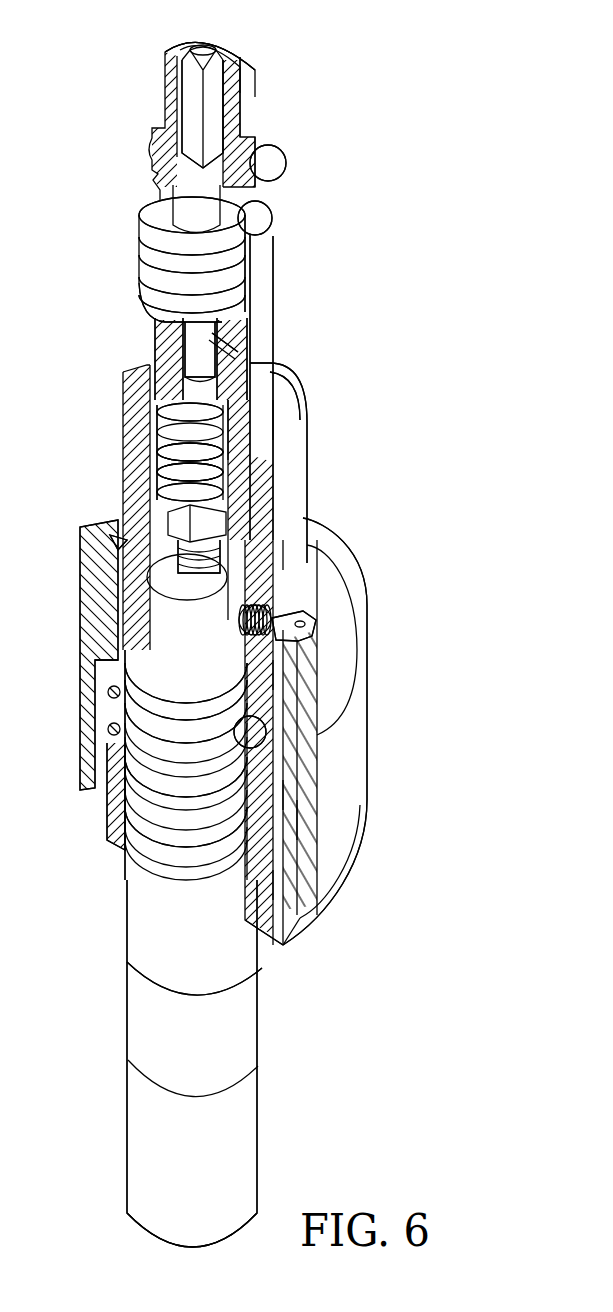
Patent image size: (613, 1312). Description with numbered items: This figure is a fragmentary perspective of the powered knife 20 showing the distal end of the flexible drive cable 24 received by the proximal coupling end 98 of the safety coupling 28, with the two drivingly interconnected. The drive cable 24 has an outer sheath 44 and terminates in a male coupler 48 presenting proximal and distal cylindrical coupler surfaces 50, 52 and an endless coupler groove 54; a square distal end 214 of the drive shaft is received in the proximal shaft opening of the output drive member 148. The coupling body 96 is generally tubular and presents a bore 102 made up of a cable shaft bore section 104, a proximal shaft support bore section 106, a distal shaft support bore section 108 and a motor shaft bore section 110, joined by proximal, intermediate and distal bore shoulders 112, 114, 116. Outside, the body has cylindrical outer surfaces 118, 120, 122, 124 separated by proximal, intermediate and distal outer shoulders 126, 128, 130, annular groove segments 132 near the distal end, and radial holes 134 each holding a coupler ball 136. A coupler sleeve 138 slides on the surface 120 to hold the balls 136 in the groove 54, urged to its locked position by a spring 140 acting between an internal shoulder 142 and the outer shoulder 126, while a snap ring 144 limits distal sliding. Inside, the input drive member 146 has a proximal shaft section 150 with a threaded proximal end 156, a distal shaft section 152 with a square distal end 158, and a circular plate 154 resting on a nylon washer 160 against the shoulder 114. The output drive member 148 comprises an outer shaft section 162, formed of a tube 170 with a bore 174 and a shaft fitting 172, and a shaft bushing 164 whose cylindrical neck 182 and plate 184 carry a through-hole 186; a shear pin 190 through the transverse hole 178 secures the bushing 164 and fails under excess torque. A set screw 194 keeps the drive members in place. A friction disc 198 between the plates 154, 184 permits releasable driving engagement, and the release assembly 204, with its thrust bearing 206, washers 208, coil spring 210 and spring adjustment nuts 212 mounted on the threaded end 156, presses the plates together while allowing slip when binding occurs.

The dispensing assembly 20 is at (365, 74).
The motor shaft bore section 110 is at (258, 72).
The cylindrical outer surface 124 is at (255, 98).
The square distal end 158 is at (258, 118).
The distal bore shoulder 116 is at (270, 138).
The distal outer shoulder 130 is at (256, 175).
The annular groove segments 132 is at (258, 210).
The safety coupling 28 is at (270, 224).
The cylindrical outer surface 122 is at (270, 245).
The intermediate bore shoulder 114 is at (242, 275).
The input drive member 146 is at (225, 278).
The friction disc 198 is at (220, 287).
The transverse hole 178 is at (238, 358).
The intermediate outer shoulder 128 is at (275, 380).
The shear pin 190 is at (297, 398).
The output drive member 148 is at (282, 414).
The thrust bearing 206 is at (268, 423).
The coupling body 96 is at (293, 469).
The tube 170 is at (236, 457).
The bore 174 is at (232, 475).
The washers 208 is at (287, 540).
The cylindrical outer surface 120 is at (273, 557).
The outer shaft section 162 is at (272, 600).
The threaded proximal end 156 is at (315, 617).
The snap ring 144 is at (222, 612).
The set screw 194 is at (235, 642).
The shaft fitting 172 is at (280, 672).
The distal cylindrical coupler surface 52 is at (232, 683).
The proximal bore shoulder 112 is at (240, 708).
The coupler ball 136 is at (240, 740).
The radial holes 134 is at (240, 760).
The internal shoulder 142 is at (290, 797).
The proximal cylindrical coupler surface 50 is at (300, 820).
The spring 140 is at (228, 816).
The male coupler 48 is at (290, 862).
The coupler sleeve 138 is at (272, 885).
The cable shaft bore section 104 is at (285, 917).
The cylindrical outer surface 118 is at (282, 940).
The proximal coupling end 98 is at (318, 1030).
The distal shaft support bore section 108 is at (187, 208).
The distal shaft section 152 is at (173, 222).
The washer 160 is at (150, 245).
The circular plate 154 is at (152, 270).
The shaft bushing 164 is at (147, 295).
The plate 184 is at (150, 317).
The through-hole 186 is at (167, 345).
The cylindrical neck 182 is at (193, 353).
The proximal shaft section 150 is at (180, 388).
The bore 102 is at (173, 435).
The coil spring 210 is at (167, 462).
The release assembly 204 is at (157, 482).
The spring adjustment nuts 212 is at (80, 532).
The proximal shaft support bore section 106 is at (85, 578).
The square distal end 214 is at (118, 627).
The coupler groove 54 is at (133, 711).
The proximal outer shoulder 126 is at (110, 766).
The drive cable 24 is at (127, 1040).
The outer sheath 44 is at (127, 1152).